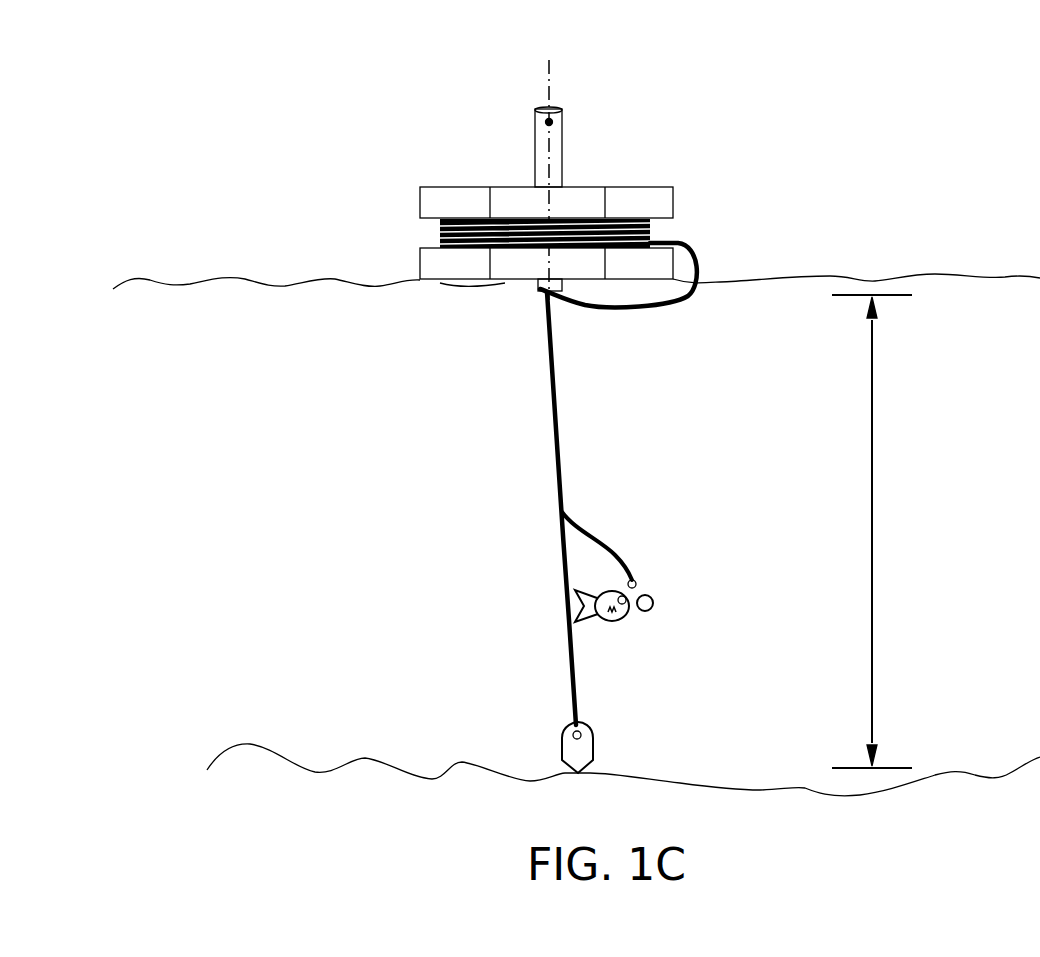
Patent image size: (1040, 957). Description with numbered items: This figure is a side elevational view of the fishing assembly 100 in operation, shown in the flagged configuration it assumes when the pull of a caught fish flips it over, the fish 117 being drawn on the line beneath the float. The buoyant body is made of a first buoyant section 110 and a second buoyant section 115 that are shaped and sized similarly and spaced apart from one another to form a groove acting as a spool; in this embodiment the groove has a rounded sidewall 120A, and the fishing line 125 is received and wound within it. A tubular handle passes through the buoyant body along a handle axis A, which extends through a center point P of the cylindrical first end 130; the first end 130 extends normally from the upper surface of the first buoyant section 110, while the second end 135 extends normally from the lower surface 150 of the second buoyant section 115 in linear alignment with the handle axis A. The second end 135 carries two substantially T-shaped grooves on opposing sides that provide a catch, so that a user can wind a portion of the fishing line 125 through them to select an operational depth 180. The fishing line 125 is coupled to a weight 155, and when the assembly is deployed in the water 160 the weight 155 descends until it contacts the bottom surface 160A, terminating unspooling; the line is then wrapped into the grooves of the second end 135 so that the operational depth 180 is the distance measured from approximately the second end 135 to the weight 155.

The fishing assembly 100 is at (683, 90).
The first buoyant section 110 is at (420, 205).
The second buoyant section 115 is at (420, 265).
The fishing lure 117 is at (668, 583).
The sidewall 120A is at (672, 227).
The fishing line 125 is at (562, 128).
The first end 130 is at (494, 153).
The second end 135 is at (532, 289).
The lower surface 150 is at (437, 290).
The weight 155 is at (594, 749).
The water 160 is at (860, 275).
The bottom surface 160A is at (965, 773).
The operational depth 180 is at (872, 521).
The handle axis A is at (562, 165).
The center point P is at (546, 121).